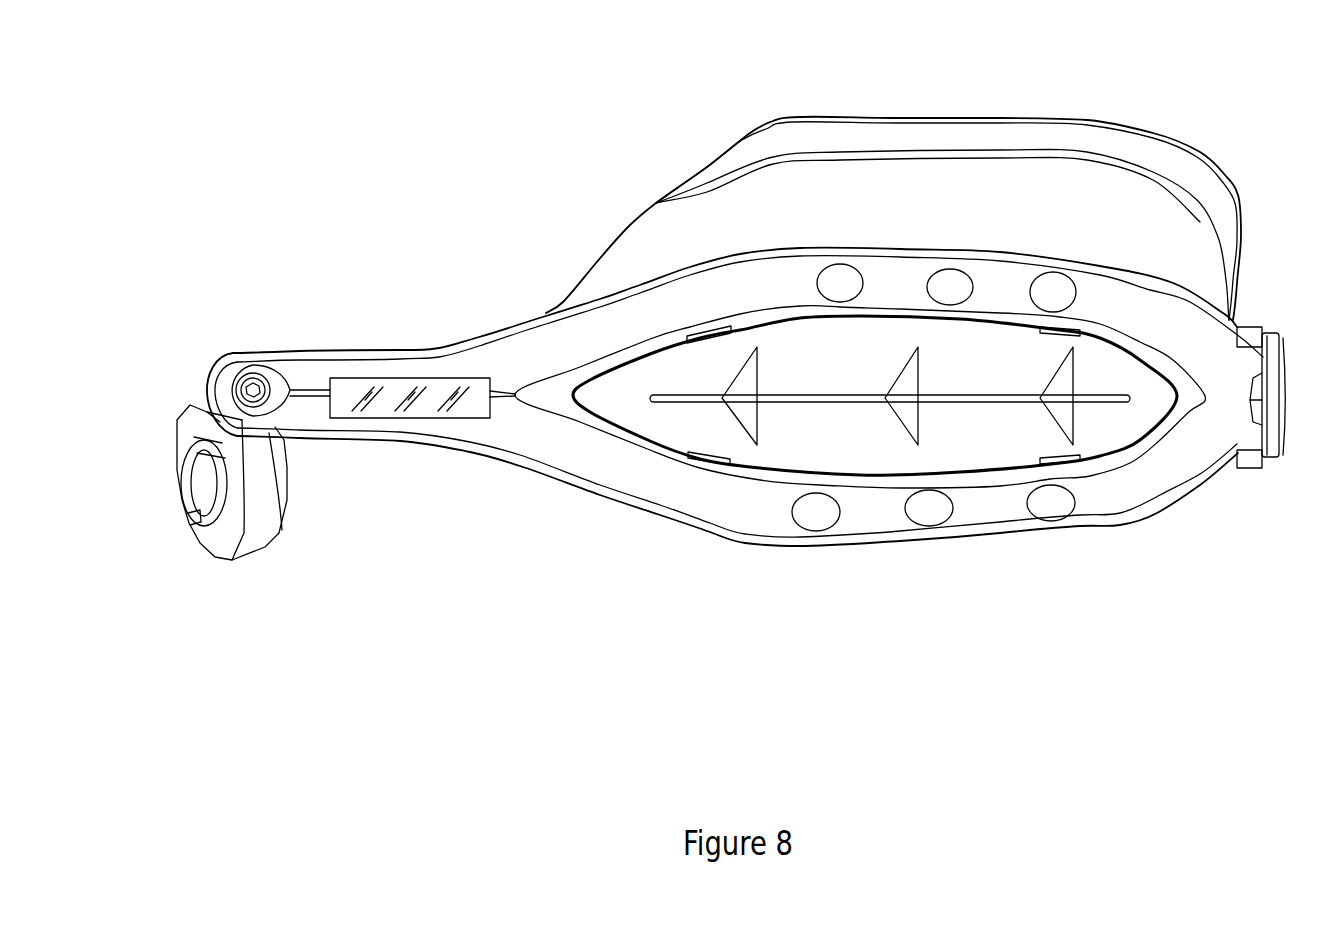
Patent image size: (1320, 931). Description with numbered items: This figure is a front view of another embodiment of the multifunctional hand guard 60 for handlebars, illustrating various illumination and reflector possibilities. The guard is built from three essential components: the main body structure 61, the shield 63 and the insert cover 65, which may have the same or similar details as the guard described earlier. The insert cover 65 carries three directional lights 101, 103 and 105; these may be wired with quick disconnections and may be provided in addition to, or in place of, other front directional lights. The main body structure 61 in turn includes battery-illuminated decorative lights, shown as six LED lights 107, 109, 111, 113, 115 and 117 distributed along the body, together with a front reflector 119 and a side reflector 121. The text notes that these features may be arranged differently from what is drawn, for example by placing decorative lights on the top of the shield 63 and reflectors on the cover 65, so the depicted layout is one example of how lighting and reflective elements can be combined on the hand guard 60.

The multifunctional hand guard 60 is at (476, 316).
The main body structure 61 is at (618, 468).
The shield 63 is at (760, 143).
The insert cover 65 is at (683, 415).
The directional light 101 is at (722, 400).
The directional light 103 is at (903, 397).
The directional light 105 is at (1050, 399).
The LED light 107 is at (839, 285).
The LED light 109 is at (950, 292).
The LED light 111 is at (1052, 297).
The LED light 113 is at (818, 517).
The LED light 115 is at (933, 510).
The LED light 117 is at (1058, 505).
The front reflector 119 is at (380, 407).
The side reflector 121 is at (1262, 407).